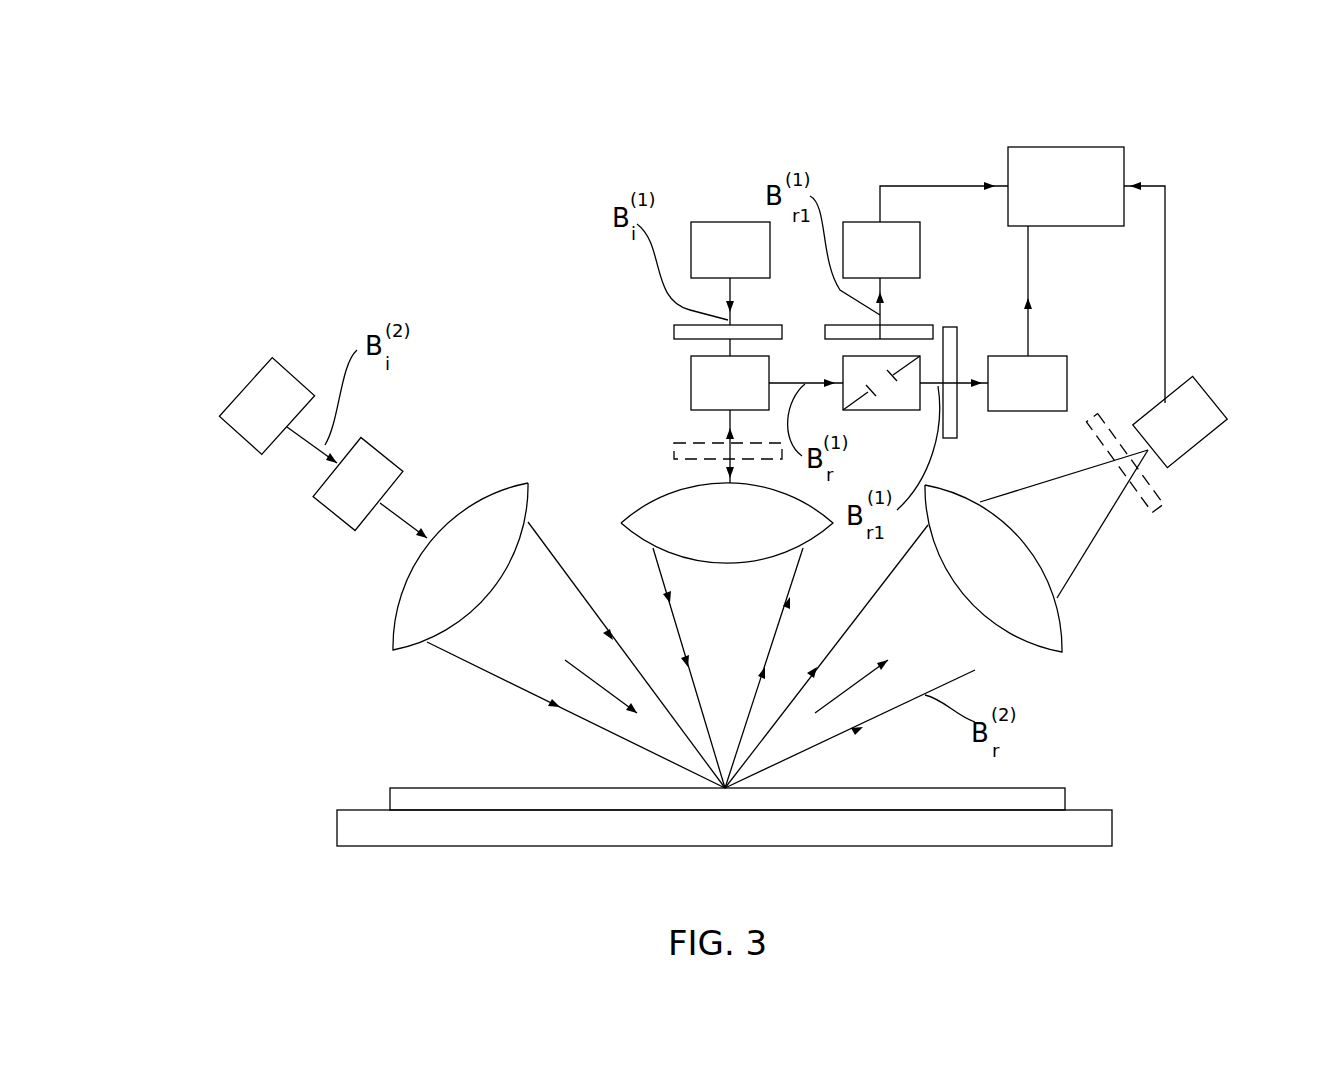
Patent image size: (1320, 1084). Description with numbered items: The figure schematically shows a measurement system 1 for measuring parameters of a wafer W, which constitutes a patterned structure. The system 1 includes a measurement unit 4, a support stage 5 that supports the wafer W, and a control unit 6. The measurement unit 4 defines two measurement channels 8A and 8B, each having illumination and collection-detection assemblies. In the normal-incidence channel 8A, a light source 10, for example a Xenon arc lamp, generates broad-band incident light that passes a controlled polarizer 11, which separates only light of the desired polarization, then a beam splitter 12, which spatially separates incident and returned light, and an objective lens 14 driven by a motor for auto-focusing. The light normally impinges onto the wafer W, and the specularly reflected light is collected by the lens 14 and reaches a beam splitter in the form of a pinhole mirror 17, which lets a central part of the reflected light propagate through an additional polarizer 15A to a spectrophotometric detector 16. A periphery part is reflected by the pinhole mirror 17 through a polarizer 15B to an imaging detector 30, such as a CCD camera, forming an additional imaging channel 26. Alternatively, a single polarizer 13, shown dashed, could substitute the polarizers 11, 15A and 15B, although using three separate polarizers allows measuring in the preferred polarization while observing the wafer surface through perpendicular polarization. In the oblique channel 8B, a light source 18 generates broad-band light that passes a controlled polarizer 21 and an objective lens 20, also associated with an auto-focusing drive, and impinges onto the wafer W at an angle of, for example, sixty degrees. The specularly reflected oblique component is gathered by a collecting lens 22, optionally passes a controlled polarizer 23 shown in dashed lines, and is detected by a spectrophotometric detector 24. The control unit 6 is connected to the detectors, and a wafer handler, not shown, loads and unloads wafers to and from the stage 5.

The measurement system 1 is at (527, 220).
The measurement unit 4 is at (293, 261).
The imaging channel 26 is at (942, 150).
The control unit 6 is at (1068, 147).
The light source 10 is at (730, 222).
The imaging detector 30 is at (868, 222).
The controlled polarizer 11 is at (668, 322).
The polarizer 15B is at (928, 323).
The additional polarizer 15A is at (957, 327).
The beam splitter 12 is at (691, 383).
The pinhole mirror 17 is at (855, 412).
The spectrophotometric detector 16 is at (1067, 383).
The single polarizer 13 is at (668, 439).
The measurement channel 8A is at (652, 450).
The objective lens 14 is at (645, 503).
The objective lens 20 is at (400, 592).
The collecting lens 22 is at (960, 495).
The light source 18 is at (247, 390).
The controlled polarizer 21 is at (333, 515).
The spectrophotometric detector 24 is at (1210, 396).
The controlled polarizer 23 is at (1168, 515).
The measurement channel 8B is at (1118, 603).
The wafer W is at (400, 787).
The support stage 5 is at (337, 836).